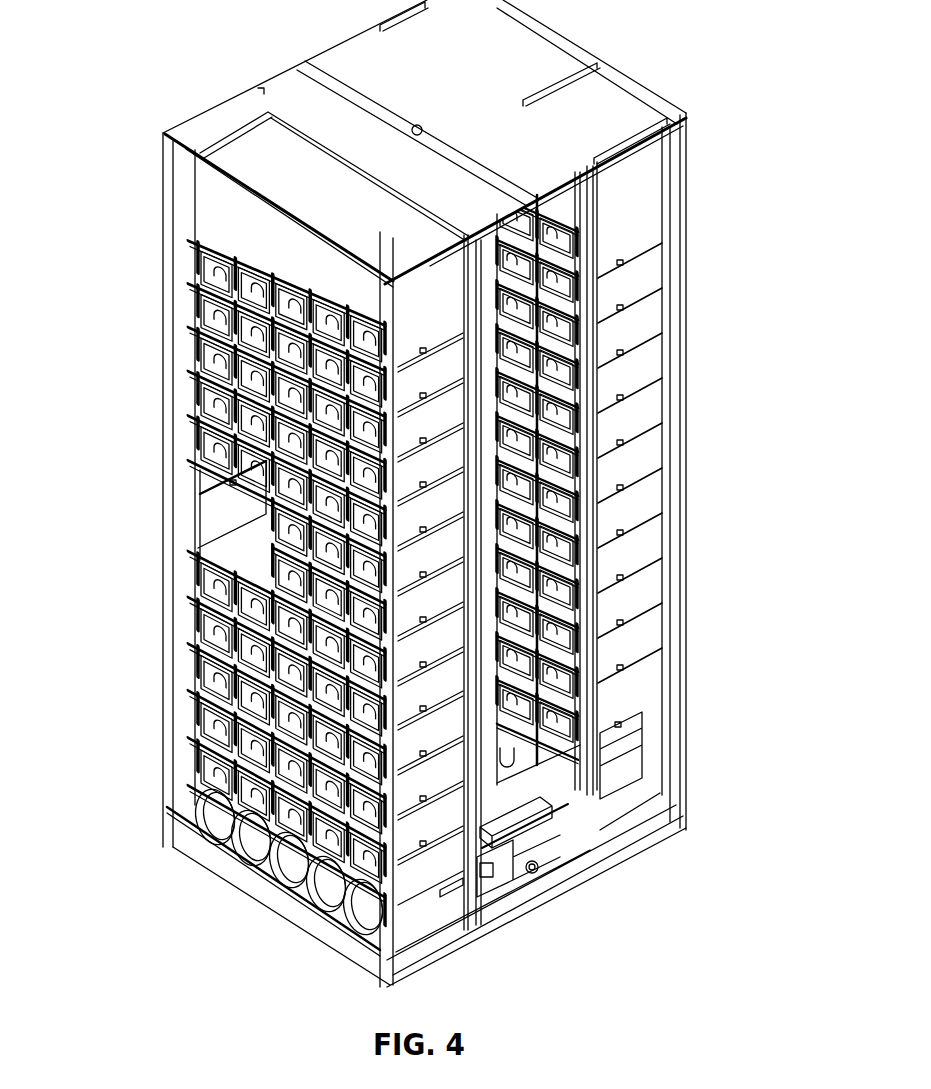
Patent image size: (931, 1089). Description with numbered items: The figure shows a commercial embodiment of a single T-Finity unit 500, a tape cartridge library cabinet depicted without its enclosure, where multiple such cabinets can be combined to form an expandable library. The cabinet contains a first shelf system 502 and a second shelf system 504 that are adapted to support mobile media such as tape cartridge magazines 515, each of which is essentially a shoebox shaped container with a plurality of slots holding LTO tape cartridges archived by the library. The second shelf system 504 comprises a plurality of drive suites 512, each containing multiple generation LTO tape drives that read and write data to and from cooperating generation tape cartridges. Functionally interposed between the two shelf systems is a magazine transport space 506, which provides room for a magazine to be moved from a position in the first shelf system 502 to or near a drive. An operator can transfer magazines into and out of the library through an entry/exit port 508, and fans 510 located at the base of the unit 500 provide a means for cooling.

The T-Finity unit 500 is at (205, 62).
The first shelf system 502 is at (140, 623).
The second shelf system 504 is at (700, 497).
The magazine transport space 506 is at (551, 832).
The entry/exit port 508 is at (215, 518).
The fans 510 is at (210, 870).
The drive suites 512 is at (638, 195).
The tape cartridge magazines 515 is at (203, 333).